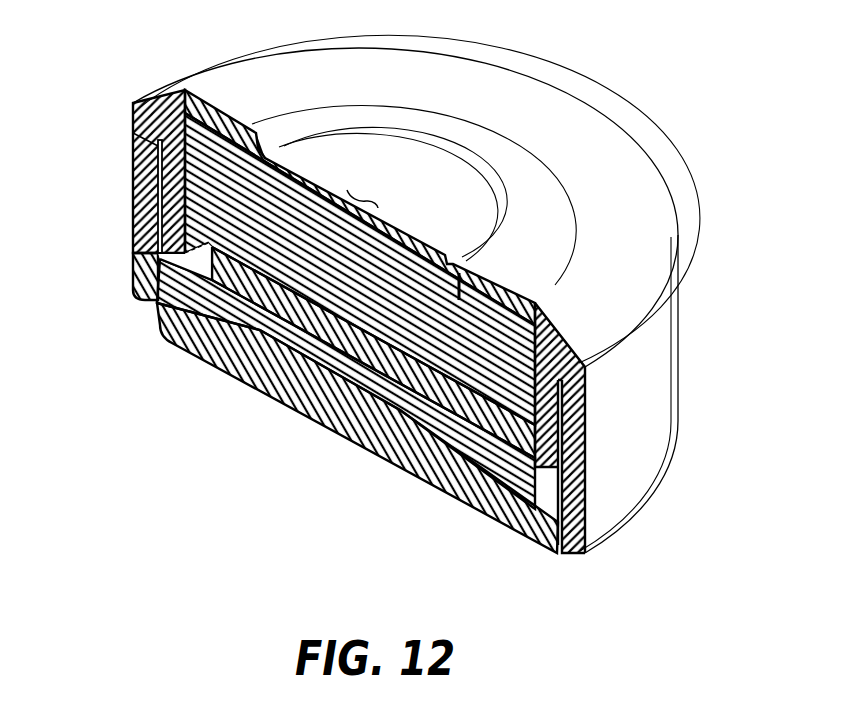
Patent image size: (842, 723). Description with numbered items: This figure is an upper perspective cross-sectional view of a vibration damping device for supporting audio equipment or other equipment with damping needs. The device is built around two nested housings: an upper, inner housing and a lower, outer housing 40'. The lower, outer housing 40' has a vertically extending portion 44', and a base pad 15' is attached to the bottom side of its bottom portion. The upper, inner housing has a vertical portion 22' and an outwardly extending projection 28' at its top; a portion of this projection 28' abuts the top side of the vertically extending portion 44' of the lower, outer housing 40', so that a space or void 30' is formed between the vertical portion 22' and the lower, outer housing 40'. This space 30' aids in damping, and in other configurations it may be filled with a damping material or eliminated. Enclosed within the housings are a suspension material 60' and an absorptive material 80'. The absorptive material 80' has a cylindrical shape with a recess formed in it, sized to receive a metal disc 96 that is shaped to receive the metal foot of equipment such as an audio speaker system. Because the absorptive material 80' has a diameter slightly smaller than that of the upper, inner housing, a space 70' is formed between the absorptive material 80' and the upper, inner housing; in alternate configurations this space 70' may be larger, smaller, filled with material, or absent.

The base pad 15' is at (357, 428).
The vertical portion 22' is at (665, 428).
The outwardly extending projection 28' is at (447, 294).
The space 30' is at (101, 196).
The lower, outer housing 40' is at (346, 384).
The vertically extending portion 44' is at (661, 466).
The suspension material 60' is at (373, 382).
The space 70' is at (125, 175).
The absorptive material 80' is at (478, 269).
The metal disc 96 is at (295, 183).